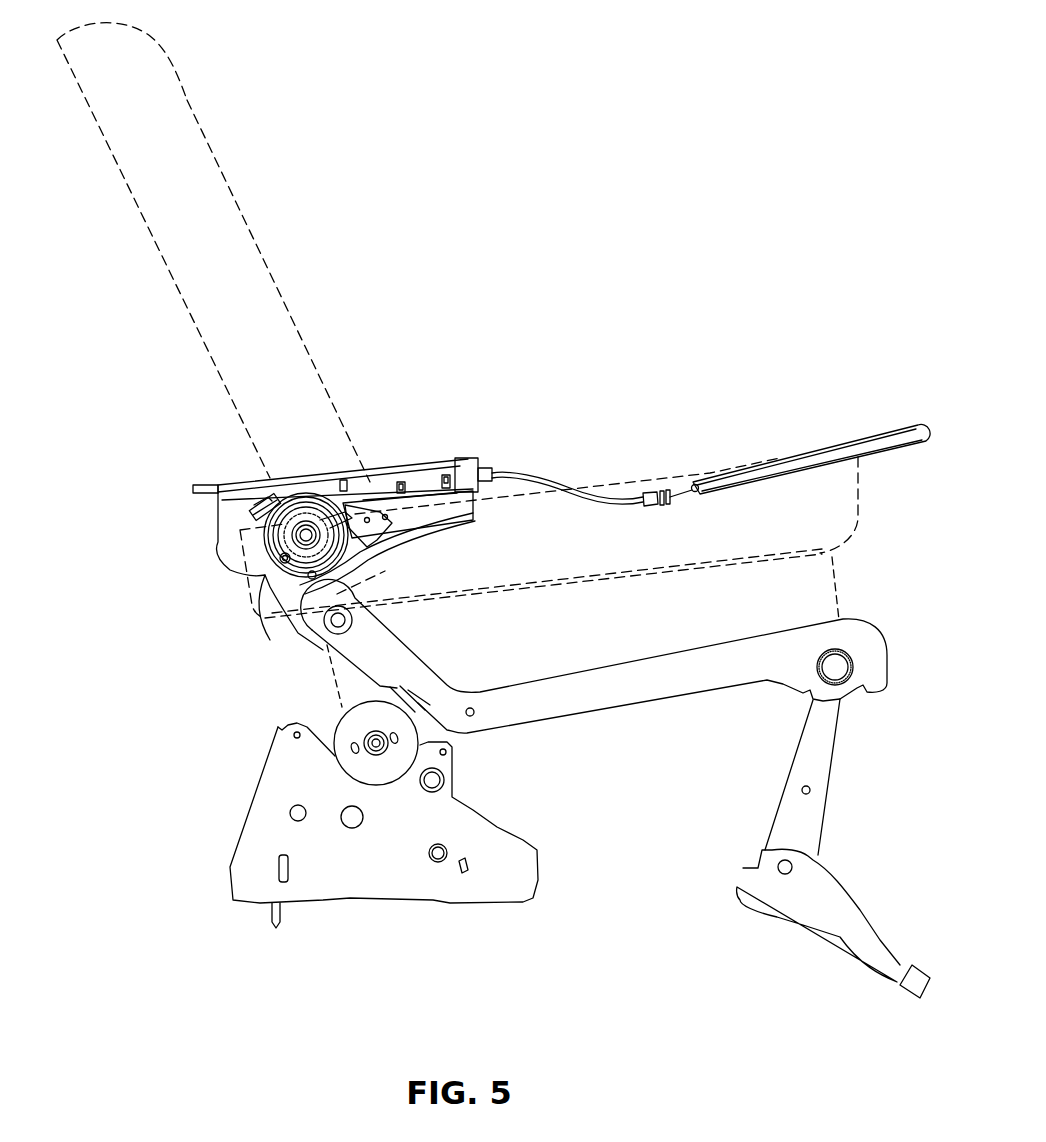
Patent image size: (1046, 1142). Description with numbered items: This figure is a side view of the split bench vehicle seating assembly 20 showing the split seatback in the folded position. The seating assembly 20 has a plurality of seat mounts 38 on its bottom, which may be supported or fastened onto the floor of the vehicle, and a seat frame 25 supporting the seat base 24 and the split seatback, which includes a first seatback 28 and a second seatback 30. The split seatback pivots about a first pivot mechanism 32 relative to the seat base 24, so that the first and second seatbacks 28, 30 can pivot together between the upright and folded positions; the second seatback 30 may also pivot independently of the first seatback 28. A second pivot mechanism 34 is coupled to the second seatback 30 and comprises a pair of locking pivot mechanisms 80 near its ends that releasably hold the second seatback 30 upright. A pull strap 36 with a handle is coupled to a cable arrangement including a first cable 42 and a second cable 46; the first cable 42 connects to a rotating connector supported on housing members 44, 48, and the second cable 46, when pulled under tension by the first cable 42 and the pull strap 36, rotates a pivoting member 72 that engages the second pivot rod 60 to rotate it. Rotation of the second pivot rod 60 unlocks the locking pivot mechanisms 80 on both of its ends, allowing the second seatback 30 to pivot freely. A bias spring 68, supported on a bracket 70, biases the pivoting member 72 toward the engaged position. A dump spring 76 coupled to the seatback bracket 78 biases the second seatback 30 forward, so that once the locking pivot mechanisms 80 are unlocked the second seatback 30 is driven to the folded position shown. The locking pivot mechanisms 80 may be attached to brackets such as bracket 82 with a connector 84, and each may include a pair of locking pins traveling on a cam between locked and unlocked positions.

The split bench vehicle seating assembly 20 is at (548, 222).
The seat base 24 is at (834, 587).
The seat frame 25 is at (872, 668).
The first seatback 28 is at (187, 100).
The second seatback 30 is at (858, 517).
The first pivot mechanism 32 is at (322, 696).
The second pivot mechanism 34 is at (256, 541).
The pull strap 36 is at (883, 436).
The seat mounts 38 is at (263, 820).
The first cable 42 is at (617, 500).
The housing member 44 is at (430, 472).
The second cable 46 is at (355, 560).
The housing member 48 is at (447, 498).
The second pivot rod 60 is at (310, 530).
The bias spring 68 is at (345, 514).
The bracket 70 is at (385, 540).
The pivoting member 72 is at (307, 580).
The dump spring 76 is at (278, 500).
The seatback bracket 78 is at (478, 508).
The locking pivot mechanisms 80 is at (293, 563).
The bracket 82 is at (212, 540).
The connector 84 is at (268, 497).